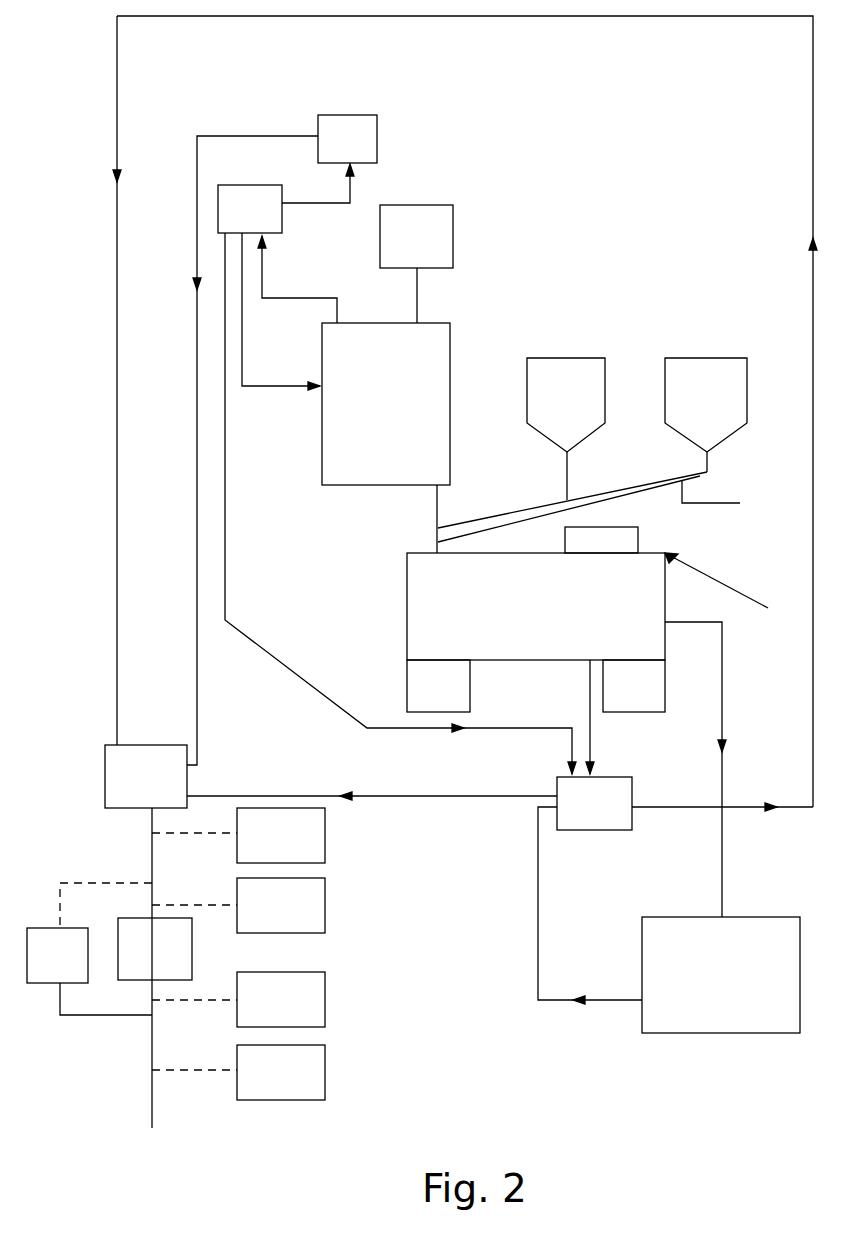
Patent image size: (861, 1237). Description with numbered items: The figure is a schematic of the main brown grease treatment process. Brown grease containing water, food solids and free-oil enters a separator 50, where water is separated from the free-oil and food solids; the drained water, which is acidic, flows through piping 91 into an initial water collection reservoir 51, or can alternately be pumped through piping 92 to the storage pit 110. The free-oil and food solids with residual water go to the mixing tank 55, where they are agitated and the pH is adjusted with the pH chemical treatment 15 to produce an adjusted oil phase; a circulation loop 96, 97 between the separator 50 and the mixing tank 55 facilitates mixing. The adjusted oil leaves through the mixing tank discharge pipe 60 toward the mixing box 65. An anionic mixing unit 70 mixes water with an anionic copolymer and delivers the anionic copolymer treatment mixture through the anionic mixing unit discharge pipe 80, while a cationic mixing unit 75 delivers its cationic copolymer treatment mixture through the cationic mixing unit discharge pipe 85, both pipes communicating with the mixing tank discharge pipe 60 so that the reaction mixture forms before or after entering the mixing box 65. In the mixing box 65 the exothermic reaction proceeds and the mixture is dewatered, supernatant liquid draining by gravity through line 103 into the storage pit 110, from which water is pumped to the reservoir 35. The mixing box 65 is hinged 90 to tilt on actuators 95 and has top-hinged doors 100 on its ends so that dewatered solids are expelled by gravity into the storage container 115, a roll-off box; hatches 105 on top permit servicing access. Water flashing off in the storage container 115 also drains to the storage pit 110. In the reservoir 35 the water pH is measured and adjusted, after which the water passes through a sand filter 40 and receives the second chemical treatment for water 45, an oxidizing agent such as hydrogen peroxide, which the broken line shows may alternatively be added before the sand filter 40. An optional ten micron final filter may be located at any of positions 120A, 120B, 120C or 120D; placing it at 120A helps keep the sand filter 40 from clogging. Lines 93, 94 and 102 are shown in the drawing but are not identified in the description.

The pH chemical treatment 15 is at (416, 264).
The reservoir 35 is at (146, 936).
The sand filter 40 is at (155, 949).
The second chemical treatment for water 45 is at (89, 949).
The separator 50 is at (250, 209).
The initial water collection reservoir 51 is at (347, 139).
The mixing tank 55 is at (386, 404).
The mixing tank discharge pipe 60 is at (437, 498).
The mixing box 65 is at (536, 606).
The anionic mixing unit 70 is at (566, 429).
The cationic mixing unit 75 is at (706, 415).
The anionic mixing unit discharge pipe 80 is at (493, 516).
The cationic mixing unit discharge pipe 85 is at (736, 503).
The hinges 90 is at (634, 686).
The piping 91 is at (313, 203).
The piping 92 is at (225, 538).
The return line 93 is at (620, 16).
The supply line 94 is at (197, 592).
The actuators 95 is at (438, 686).
The circulation loop 96 is at (263, 387).
The circulation loop 97 is at (290, 302).
The hinged doors 100 is at (710, 572).
The signal line 102 is at (435, 796).
The line 103 is at (590, 735).
The hatches 105 is at (638, 540).
The storage pit 110 is at (685, 803).
The storage container 115 is at (669, 920).
The final filter at position A 120A is at (238, 835).
The final filter at position B 120B is at (238, 905).
The final filter at position C 120C is at (238, 999).
The final filter at position D 120D is at (238, 1072).